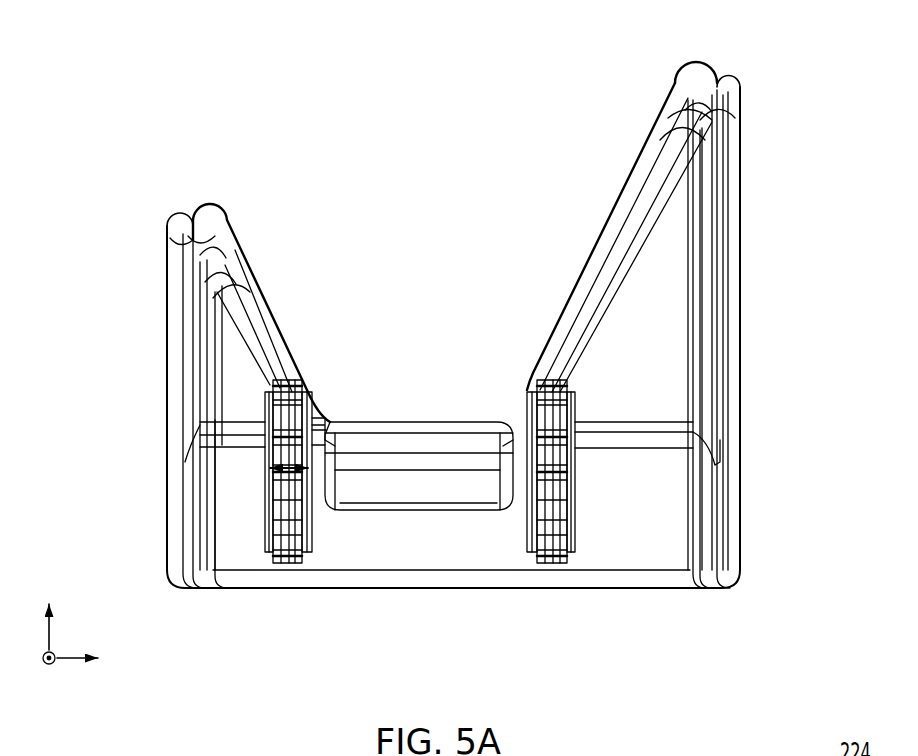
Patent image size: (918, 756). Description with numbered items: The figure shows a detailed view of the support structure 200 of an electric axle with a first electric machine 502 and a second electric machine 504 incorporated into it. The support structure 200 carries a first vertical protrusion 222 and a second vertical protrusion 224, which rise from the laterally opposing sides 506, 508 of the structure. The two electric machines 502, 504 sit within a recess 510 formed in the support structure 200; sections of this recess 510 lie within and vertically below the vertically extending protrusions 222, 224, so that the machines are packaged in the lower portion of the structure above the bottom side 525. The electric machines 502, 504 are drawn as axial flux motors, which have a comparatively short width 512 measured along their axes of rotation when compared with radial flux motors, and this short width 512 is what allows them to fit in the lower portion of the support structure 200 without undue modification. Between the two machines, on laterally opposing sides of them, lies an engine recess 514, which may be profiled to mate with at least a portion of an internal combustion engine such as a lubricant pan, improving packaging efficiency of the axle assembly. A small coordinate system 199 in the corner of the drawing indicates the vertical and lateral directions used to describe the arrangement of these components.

The support structure 200 is at (131, 170).
The first vertical protrusion 222 is at (209, 199).
The second vertical protrusion 224 is at (743, 78).
The lateral side 506 is at (143, 320).
The lateral side 508 is at (757, 265).
The recess 510 is at (329, 427).
The engine recess 514 is at (438, 447).
The width 512 is at (284, 470).
The first electric machine 502 is at (289, 572).
The second electric machine 504 is at (554, 572).
The bottom side 525 is at (436, 597).
The coordinate system 199 is at (61, 648).